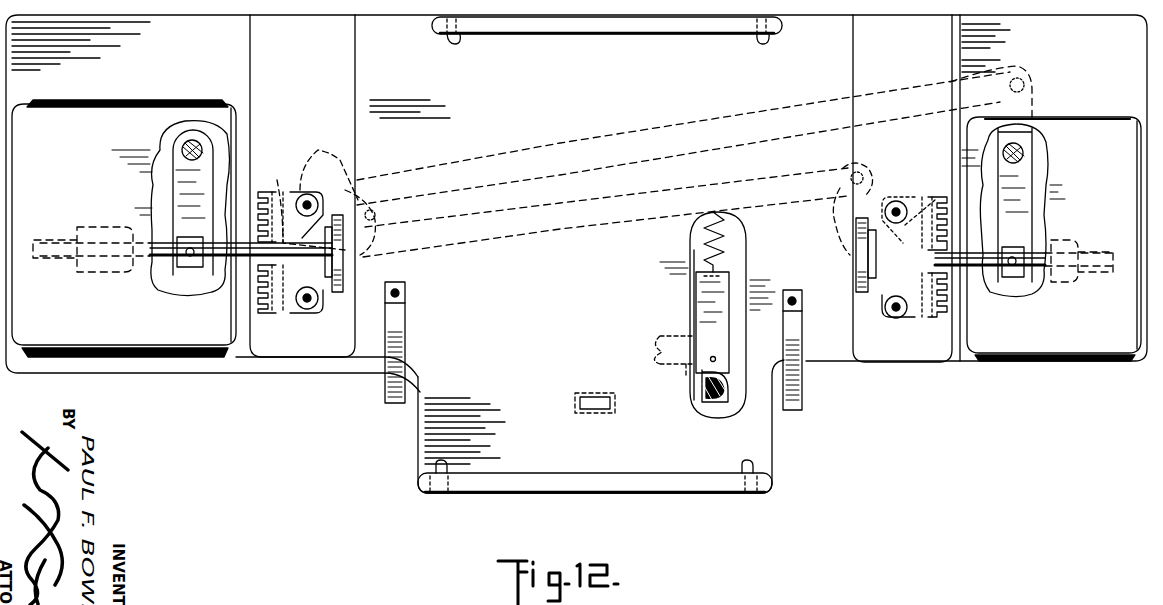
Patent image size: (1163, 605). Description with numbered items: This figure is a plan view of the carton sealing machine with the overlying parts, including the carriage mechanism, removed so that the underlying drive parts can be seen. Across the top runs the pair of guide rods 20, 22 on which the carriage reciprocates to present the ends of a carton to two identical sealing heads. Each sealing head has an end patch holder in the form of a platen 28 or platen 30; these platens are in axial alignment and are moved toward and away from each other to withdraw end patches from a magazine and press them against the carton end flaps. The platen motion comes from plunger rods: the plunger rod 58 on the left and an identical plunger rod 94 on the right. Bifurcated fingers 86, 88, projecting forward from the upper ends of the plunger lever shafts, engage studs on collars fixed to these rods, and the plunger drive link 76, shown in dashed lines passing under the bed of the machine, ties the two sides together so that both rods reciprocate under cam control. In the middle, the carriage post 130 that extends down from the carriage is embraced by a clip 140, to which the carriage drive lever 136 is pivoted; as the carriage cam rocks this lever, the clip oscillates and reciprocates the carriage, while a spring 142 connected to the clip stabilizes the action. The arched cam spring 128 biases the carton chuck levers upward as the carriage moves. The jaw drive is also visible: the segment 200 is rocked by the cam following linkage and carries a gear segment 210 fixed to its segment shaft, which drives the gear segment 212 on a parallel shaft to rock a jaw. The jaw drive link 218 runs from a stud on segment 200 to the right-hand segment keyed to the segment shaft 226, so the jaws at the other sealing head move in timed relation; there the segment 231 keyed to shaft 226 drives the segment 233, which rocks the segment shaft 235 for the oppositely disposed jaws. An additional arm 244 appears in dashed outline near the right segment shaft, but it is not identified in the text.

The guide rod 20 is at (460, 41).
The guide rod 22 is at (760, 40).
The platen 28 is at (343, 266).
The platen 30 is at (857, 276).
The plunger rod 58 is at (165, 250).
The plunger drive link 76 is at (559, 146).
The bifurcated finger 86 is at (177, 182).
The bifurcated finger 88 is at (1018, 200).
The plunger rod 94 is at (985, 284).
The cam spring 128 is at (386, 395).
The carriage post 130 is at (724, 395).
The carriage drive lever 136 is at (664, 366).
The clip 140 is at (697, 298).
The spring 142 is at (702, 241).
The segment 200 is at (306, 190).
The gear segment 210 is at (280, 194).
The gear segment 212 is at (266, 306).
The jaw drive link 218 is at (566, 232).
The segment shaft 226 is at (890, 315).
The segment 231 is at (932, 315).
The segment 233 is at (936, 200).
The segment shaft 235 is at (896, 200).
The arm 244 is at (838, 232).